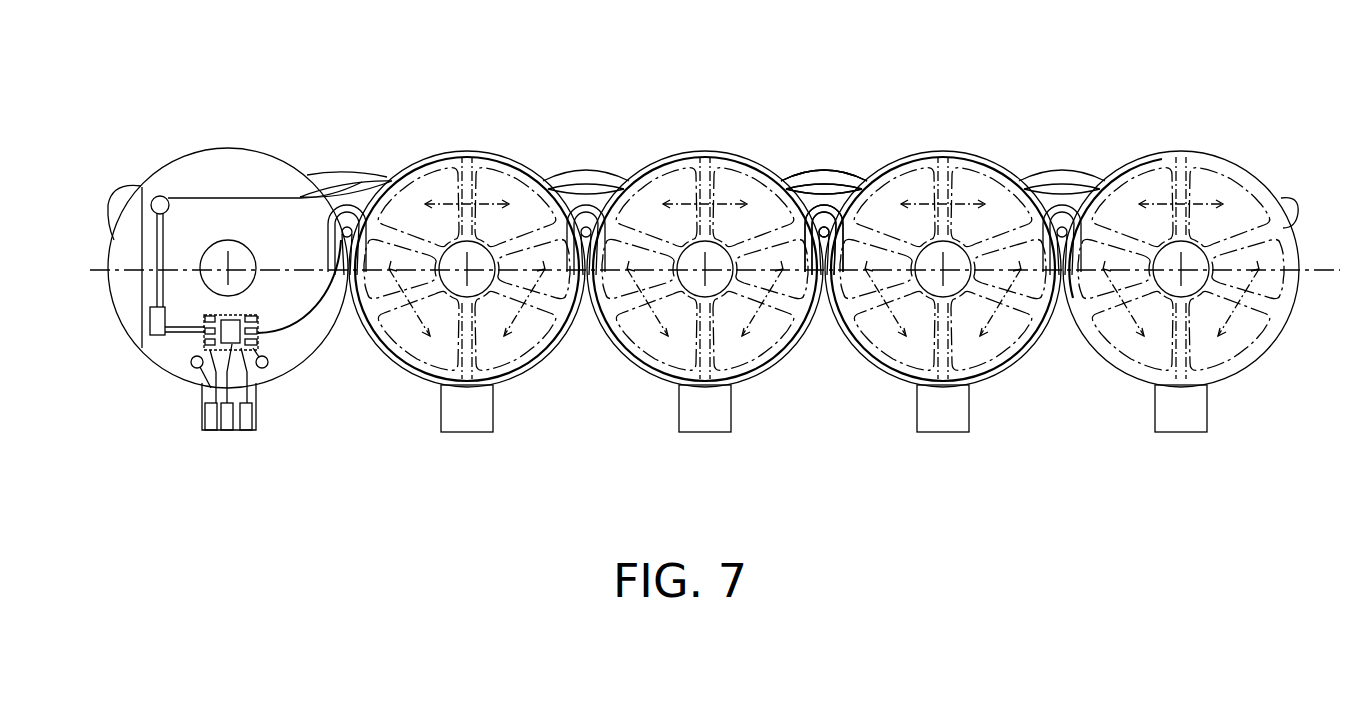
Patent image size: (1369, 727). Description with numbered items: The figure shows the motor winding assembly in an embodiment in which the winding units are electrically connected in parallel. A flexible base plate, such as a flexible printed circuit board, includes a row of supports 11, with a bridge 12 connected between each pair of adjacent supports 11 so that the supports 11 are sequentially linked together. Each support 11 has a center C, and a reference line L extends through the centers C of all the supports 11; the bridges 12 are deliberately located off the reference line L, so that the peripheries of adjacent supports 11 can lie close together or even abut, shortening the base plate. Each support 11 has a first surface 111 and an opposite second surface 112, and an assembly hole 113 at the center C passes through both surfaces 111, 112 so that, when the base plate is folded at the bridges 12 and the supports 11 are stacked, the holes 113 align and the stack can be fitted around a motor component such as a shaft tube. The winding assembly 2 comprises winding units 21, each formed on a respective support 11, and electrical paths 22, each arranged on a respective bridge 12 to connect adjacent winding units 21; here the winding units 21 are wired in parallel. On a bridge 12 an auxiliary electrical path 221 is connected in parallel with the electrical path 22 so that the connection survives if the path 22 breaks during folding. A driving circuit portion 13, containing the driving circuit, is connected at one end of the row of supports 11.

The reference line L is at (96, 262).
The driving circuit portion 13 is at (230, 155).
The bridge 12 is at (348, 165).
The support 11 is at (482, 152).
The first surface 111 is at (622, 356).
The second surface 112 is at (655, 378).
The assembly hole 113 is at (700, 167).
The center C is at (232, 272).
The winding assembly 2 is at (742, 64).
The winding unit 21 is at (736, 168).
The electrical path 22 is at (769, 184).
The auxiliary electrical path 221 is at (818, 214).